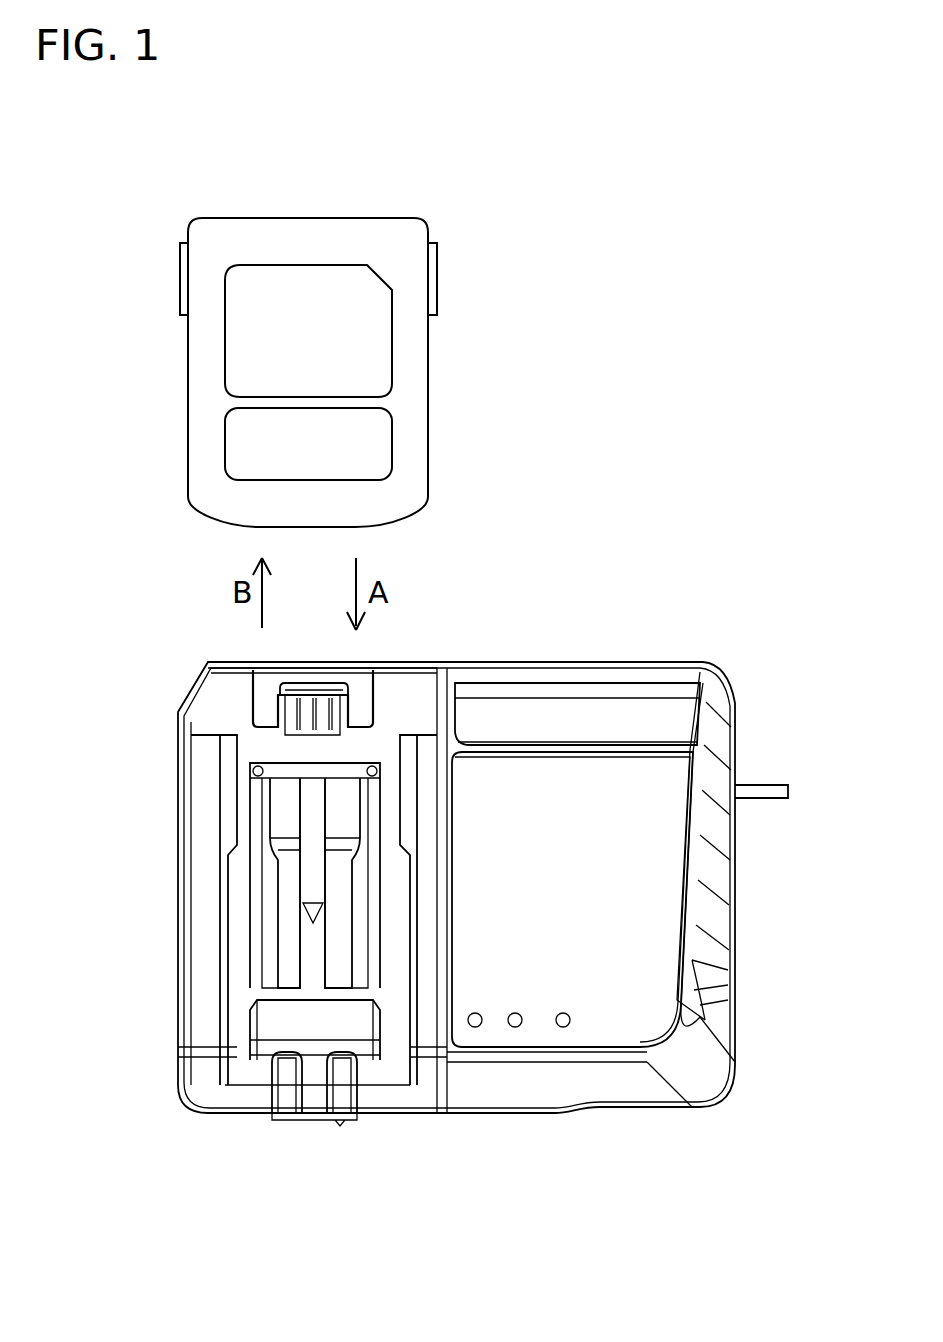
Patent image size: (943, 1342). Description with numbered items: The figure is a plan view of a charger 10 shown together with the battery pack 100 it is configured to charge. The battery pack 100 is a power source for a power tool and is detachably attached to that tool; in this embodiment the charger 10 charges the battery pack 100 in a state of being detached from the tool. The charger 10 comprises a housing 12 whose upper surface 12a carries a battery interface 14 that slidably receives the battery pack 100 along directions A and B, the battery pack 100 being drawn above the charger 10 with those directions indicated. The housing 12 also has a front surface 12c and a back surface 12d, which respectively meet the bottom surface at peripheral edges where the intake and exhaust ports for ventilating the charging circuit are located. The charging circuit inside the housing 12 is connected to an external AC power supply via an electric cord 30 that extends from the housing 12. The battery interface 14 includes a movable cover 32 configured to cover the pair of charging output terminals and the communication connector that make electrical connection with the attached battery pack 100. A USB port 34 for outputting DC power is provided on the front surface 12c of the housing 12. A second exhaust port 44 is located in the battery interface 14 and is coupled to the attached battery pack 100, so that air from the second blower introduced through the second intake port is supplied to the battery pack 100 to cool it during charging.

The battery pack 100 is at (414, 160).
The charger 10 is at (705, 603).
The housing 12 is at (718, 700).
The upper surface 12a is at (598, 770).
The front surface 12c is at (480, 1116).
The back surface 12d is at (492, 662).
The battery interface 14 is at (245, 752).
The electric cord 30 is at (775, 786).
The movable cover 32 is at (255, 812).
The USB port 34 is at (300, 1118).
The second exhaust port 44 is at (262, 708).